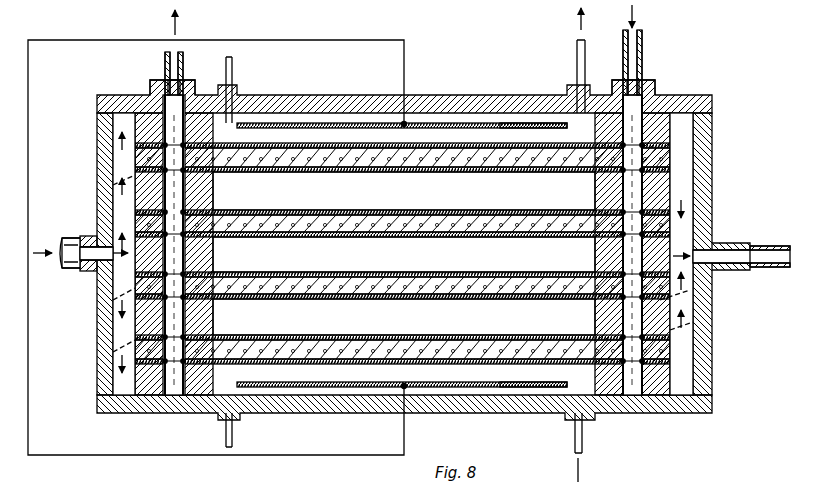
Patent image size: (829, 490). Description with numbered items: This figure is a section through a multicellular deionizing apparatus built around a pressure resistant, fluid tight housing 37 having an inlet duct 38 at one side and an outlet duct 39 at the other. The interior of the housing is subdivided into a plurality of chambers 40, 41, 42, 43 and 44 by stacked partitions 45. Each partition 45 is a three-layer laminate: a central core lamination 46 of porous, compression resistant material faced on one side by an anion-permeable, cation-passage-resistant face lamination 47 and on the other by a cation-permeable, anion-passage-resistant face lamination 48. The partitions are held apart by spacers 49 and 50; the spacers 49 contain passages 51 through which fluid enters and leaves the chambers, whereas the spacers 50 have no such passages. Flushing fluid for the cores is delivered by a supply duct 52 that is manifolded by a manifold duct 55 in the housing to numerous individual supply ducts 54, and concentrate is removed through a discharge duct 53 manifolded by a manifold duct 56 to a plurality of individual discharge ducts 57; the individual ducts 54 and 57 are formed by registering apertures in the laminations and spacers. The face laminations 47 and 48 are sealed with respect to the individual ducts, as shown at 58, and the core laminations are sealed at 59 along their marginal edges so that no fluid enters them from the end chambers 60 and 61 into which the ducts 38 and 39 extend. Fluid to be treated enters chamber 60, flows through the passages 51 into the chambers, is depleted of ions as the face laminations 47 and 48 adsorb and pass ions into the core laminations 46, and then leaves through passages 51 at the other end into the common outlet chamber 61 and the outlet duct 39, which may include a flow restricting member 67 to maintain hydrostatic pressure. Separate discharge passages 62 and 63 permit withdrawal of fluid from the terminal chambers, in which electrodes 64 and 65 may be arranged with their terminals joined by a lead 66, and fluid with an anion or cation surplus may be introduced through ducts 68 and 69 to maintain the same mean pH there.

The housing 37 is at (122, 413).
The inlet duct 38 is at (79, 237).
The outlet duct 39 is at (767, 246).
The chamber 40 is at (592, 134).
The chamber 41 is at (562, 197).
The chamber 42 is at (562, 259).
The chamber 43 is at (562, 324).
The chamber 44 is at (592, 384).
The partition 45 is at (418, 165).
The core lamination 46 is at (306, 170).
The face lamination 47 is at (350, 148).
The face lamination 48 is at (330, 172).
The spacer 49 is at (403, 297).
The spacer 50 is at (682, 110).
The passage 51 is at (113, 183).
The supply duct 52 is at (642, 54).
The discharge duct 53 is at (181, 52).
The individual supply duct 54 is at (633, 395).
The manifold duct 55 is at (642, 98).
The manifold duct 56 is at (170, 100).
The individual discharge duct 57 is at (165, 396).
The seal 58 is at (673, 133).
The seal 59 is at (130, 150).
The chamber 60 is at (121, 118).
The outlet chamber 61 is at (690, 347).
The discharge passage 62 is at (577, 60).
The discharge passage 63 is at (575, 440).
The electrode 64 is at (292, 123).
The electrode 65 is at (342, 388).
The lead 66 is at (70, 40).
The flow restricting member 67 is at (727, 250).
The duct 68 is at (233, 57).
The duct 69 is at (233, 433).